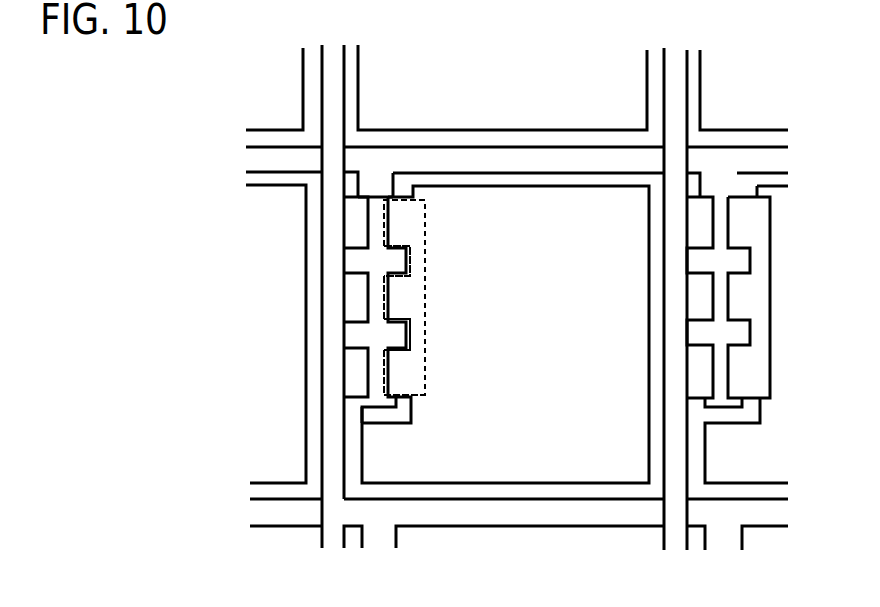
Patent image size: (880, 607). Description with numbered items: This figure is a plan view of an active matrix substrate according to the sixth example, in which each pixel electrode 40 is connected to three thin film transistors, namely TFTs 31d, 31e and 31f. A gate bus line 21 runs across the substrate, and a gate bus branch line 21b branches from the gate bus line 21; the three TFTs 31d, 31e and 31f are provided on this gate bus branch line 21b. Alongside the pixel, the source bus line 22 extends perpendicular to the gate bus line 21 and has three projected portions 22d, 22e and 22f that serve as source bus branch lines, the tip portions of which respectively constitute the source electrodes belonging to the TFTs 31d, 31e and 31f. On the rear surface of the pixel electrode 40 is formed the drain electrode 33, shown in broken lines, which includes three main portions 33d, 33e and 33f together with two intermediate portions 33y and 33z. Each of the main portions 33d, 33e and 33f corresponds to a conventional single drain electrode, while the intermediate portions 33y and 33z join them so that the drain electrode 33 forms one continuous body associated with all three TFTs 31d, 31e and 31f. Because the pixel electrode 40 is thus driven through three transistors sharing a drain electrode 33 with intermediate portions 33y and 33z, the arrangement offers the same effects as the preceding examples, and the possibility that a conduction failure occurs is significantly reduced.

The gate bus line 21 is at (602, 162).
The gate bus branch line 21b is at (372, 403).
The source bus line 22 is at (328, 89).
The projected portion 22d is at (348, 218).
The projected portion 22e is at (350, 295).
The projected portion 22f is at (352, 380).
The TFT 31d is at (376, 207).
The TFT 31e is at (375, 308).
The TFT 31f is at (380, 372).
The drain electrode 33 is at (433, 386).
The main portion 33d is at (405, 220).
The main portion 33e is at (405, 302).
The main portion 33f is at (407, 382).
The intermediate portion 33y is at (420, 257).
The intermediate portion 33z is at (417, 334).
The pixel electrode 40 is at (601, 444).